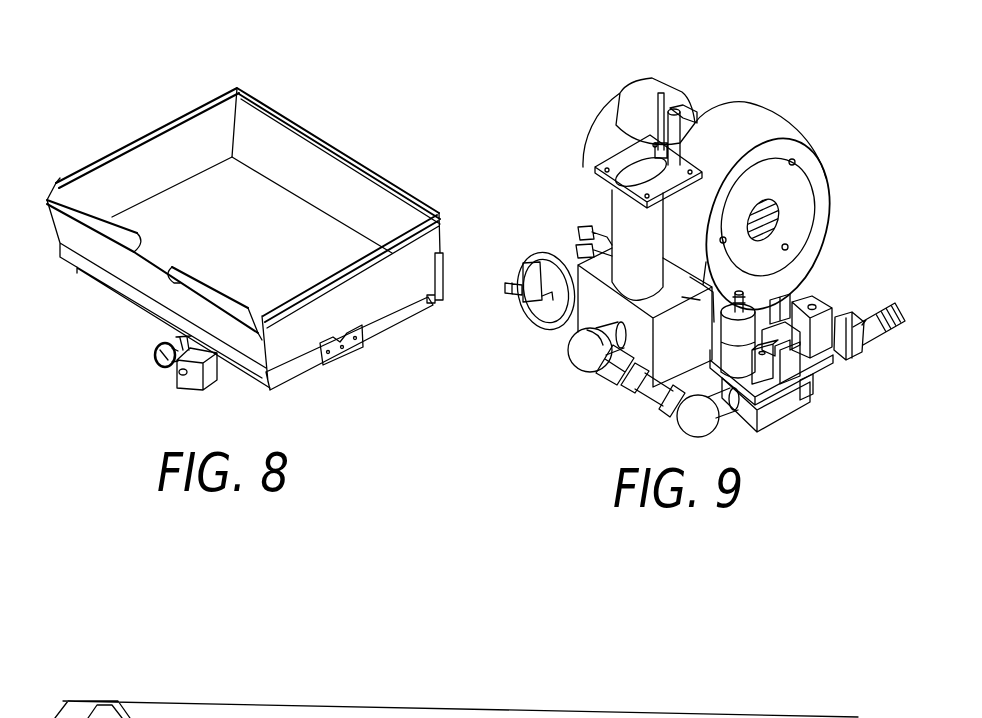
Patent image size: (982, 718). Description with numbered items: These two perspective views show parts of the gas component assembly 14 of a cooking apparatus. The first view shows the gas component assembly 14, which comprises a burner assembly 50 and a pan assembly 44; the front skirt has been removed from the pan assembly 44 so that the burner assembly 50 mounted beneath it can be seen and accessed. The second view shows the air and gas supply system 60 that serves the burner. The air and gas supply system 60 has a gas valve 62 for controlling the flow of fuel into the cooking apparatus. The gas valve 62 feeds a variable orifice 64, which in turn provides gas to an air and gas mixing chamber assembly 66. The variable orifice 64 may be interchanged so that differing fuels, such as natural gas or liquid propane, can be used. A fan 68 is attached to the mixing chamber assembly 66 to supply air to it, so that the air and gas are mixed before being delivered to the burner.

In FIG. 8, the gas component assembly 14 is at (320, 120).
In FIG. 8, the pan assembly 44 is at (317, 247).
In FIG. 8, the burner assembly 50 is at (143, 347).
In FIG. 9, the air and gas supply system 60 is at (691, 231).
In FIG. 9, the gas valve 62 is at (808, 390).
In FIG. 9, the variable orifice 64 is at (647, 403).
In FIG. 9, the air and gas mixing chamber assembly 66 is at (593, 307).
In FIG. 9, the fan 68 is at (790, 198).